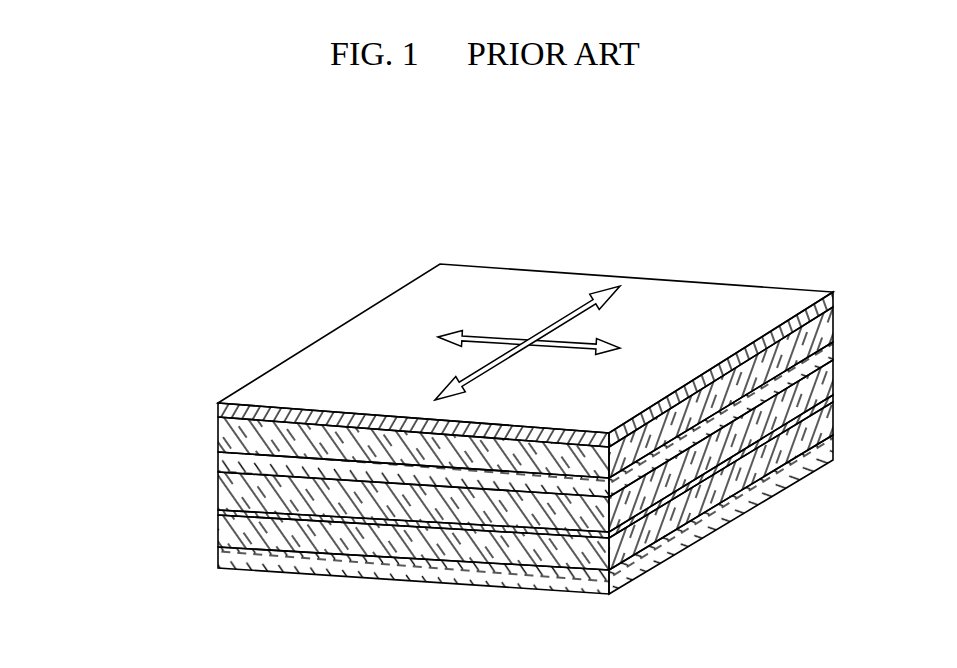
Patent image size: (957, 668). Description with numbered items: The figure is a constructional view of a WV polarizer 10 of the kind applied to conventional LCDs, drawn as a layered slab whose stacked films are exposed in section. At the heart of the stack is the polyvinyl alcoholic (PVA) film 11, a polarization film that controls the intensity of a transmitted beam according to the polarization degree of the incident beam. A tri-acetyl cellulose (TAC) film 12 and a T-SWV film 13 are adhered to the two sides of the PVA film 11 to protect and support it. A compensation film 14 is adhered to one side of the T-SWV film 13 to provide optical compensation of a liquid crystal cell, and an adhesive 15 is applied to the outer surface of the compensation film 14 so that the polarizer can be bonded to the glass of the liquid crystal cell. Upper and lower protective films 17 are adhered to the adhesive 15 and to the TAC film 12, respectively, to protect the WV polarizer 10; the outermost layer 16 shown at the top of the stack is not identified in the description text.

The WV polarizer 10 is at (307, 288).
The top protective layer 16 is at (218, 409).
The tri-acetyl cellulose (TAC) film 12 is at (218, 433).
The polyvinyl alcoholic (PVA) film 11 is at (218, 462).
The T-SWV film 13 is at (218, 490).
The compensation film 14 is at (218, 512).
The adhesive 15 is at (218, 531).
The protective films 17 is at (218, 562).